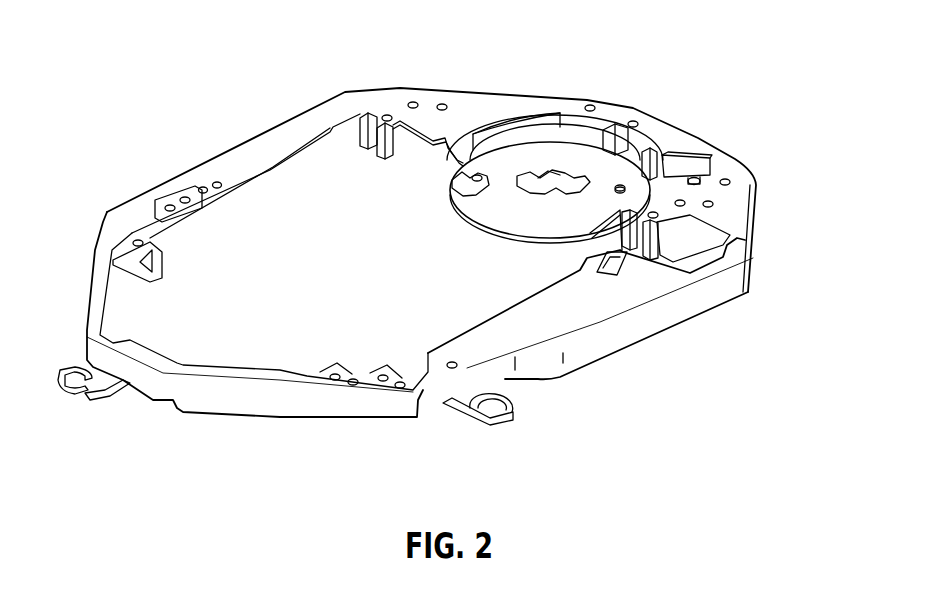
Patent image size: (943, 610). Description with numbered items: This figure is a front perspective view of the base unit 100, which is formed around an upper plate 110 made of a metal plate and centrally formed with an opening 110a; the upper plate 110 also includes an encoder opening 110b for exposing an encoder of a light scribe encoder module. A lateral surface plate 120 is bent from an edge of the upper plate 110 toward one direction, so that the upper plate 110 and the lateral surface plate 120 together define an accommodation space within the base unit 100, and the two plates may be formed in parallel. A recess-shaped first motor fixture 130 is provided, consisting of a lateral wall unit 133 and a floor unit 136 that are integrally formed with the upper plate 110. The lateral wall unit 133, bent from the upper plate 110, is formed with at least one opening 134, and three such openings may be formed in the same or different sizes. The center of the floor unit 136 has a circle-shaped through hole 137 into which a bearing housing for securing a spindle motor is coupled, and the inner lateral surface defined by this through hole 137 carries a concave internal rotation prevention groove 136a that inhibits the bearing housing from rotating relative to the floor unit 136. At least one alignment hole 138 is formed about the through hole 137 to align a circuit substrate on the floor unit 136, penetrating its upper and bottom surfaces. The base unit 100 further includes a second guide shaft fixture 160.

The base unit 100 is at (640, 102).
The upper plate 110 is at (240, 158).
The opening 110a is at (327, 302).
The encoder opening 110b is at (693, 165).
The lateral surface plate 120 is at (637, 322).
The first motor fixture 130 is at (526, 222).
The lateral wall unit 133 is at (585, 130).
The opening 134 is at (660, 152).
The floor unit 136 is at (515, 150).
The internal rotation prevention groove 136a is at (545, 172).
The through hole 137 is at (462, 190).
The alignment hole 138 is at (713, 197).
The second guide shaft fixture 160 is at (362, 148).